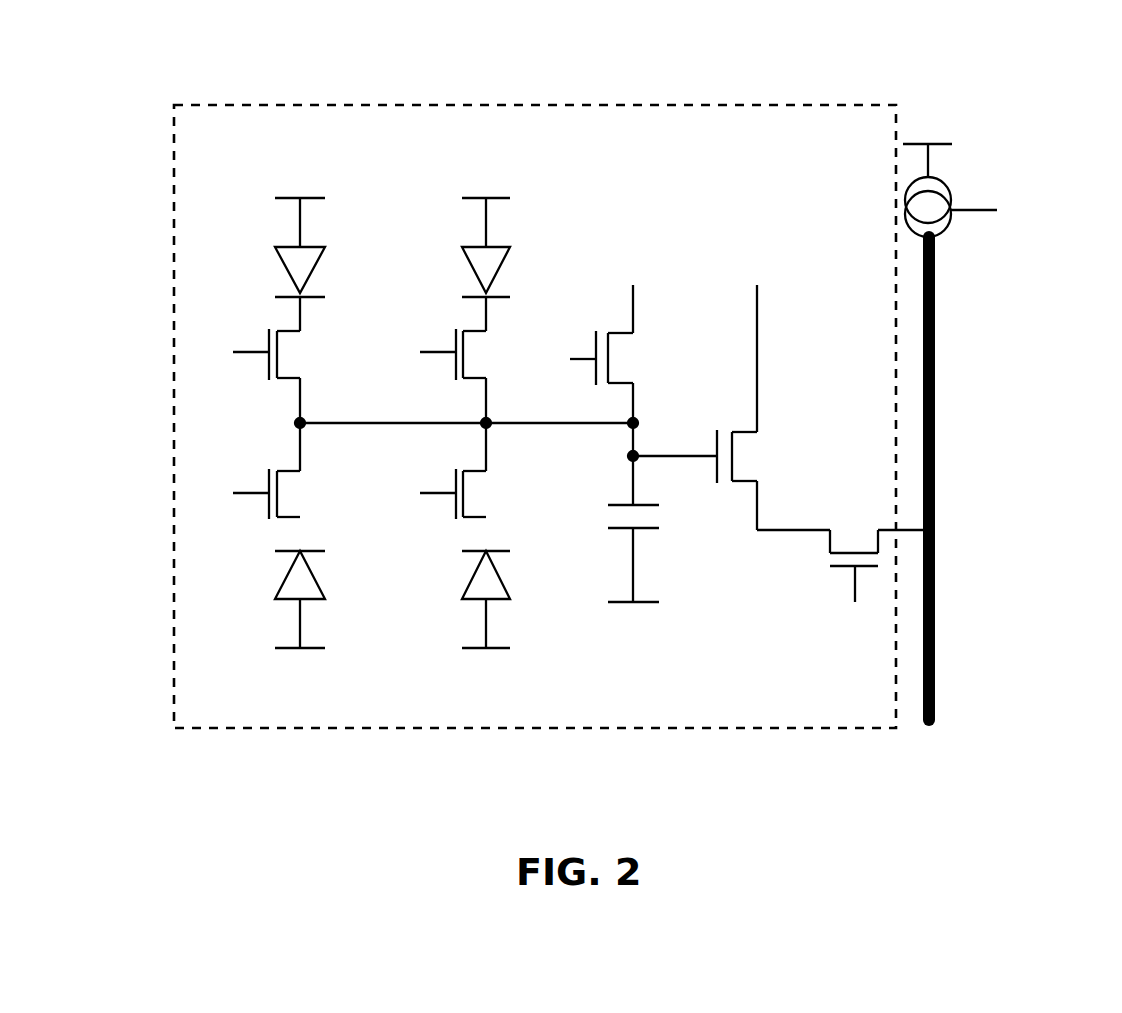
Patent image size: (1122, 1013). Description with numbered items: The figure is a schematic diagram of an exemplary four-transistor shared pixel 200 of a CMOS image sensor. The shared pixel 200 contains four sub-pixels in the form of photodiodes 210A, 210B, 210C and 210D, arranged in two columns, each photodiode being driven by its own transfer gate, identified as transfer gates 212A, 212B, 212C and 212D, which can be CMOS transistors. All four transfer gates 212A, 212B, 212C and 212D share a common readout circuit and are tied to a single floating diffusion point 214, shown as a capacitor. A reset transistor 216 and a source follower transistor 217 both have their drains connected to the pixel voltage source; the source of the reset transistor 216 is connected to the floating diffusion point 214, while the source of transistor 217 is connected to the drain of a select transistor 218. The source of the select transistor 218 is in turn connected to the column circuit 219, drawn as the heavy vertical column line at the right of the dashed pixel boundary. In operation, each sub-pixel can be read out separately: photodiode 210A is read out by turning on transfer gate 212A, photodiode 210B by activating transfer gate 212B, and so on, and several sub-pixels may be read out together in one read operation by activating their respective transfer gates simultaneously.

The shared pixel 200 is at (803, 105).
The photodiode 210A is at (297, 583).
The photodiode 210B is at (484, 583).
The photodiode 210C is at (300, 262).
The photodiode 210D is at (486, 262).
The transfer gate 212A is at (263, 489).
The transfer gate 212B is at (470, 480).
The transfer gate 212C is at (263, 345).
The transfer gate 212D is at (452, 345).
The floating diffusion point 214 is at (648, 533).
The reset transistor 216 is at (640, 330).
The transistor 217 is at (752, 445).
The select transistor 218 is at (830, 583).
The column circuit 219 is at (935, 275).